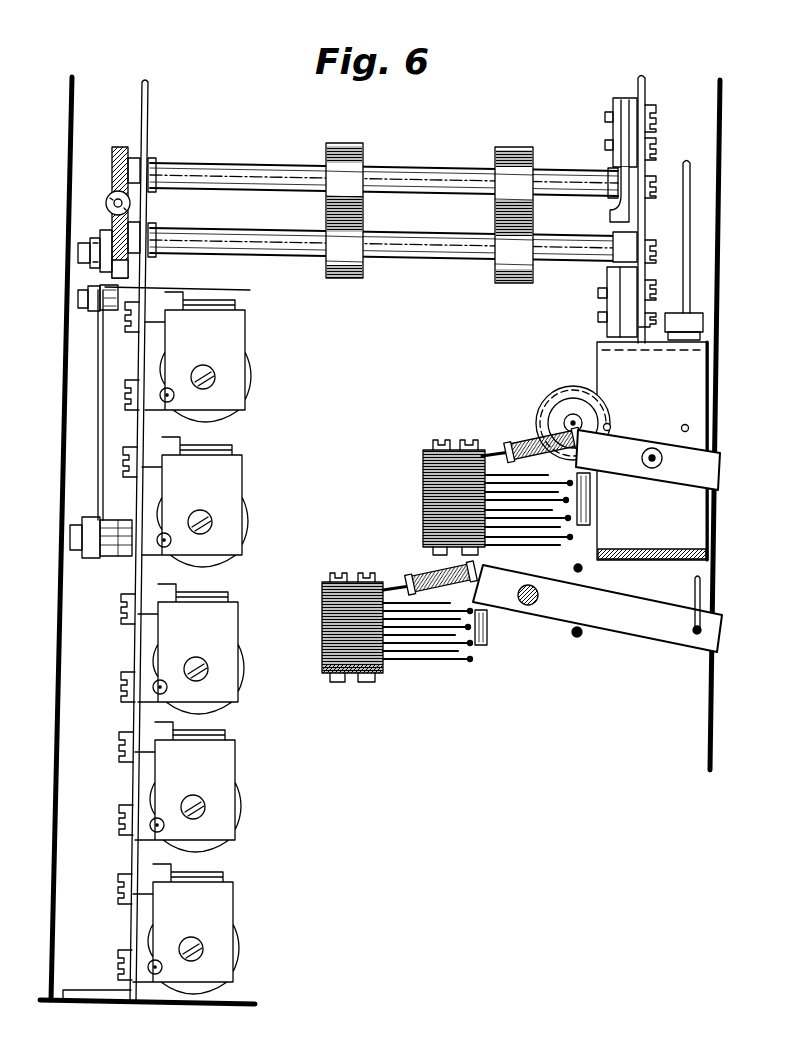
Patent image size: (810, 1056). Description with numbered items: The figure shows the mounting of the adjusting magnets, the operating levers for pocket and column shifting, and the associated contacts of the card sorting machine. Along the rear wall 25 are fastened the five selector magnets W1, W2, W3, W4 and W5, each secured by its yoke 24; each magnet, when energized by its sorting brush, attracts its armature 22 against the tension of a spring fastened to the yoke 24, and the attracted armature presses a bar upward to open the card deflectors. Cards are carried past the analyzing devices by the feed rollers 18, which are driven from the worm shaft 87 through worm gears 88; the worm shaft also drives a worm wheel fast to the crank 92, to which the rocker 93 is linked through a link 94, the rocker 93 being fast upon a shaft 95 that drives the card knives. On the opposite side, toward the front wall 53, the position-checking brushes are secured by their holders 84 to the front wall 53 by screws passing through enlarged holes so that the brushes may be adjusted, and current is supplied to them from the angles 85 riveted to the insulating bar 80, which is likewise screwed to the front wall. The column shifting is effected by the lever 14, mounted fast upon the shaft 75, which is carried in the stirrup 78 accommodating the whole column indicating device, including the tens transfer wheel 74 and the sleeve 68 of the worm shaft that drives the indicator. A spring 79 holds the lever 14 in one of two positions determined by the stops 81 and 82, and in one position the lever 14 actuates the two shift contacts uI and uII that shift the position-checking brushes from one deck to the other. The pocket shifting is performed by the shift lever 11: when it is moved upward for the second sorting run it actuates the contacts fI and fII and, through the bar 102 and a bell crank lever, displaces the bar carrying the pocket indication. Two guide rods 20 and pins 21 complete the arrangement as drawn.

The shift lever 11 is at (597, 630).
The lever 14 is at (648, 461).
The feed rollers 18 is at (515, 178).
The guide rods 20 is at (262, 243).
The pins 21 is at (582, 569).
The armature 22 is at (215, 733).
The yoke 24 is at (230, 340).
The rear wall 25 is at (133, 792).
The front wall 53 is at (645, 86).
The sleeve 68 is at (697, 313).
The tens transfer wheel 74 is at (552, 403).
The shaft 75 is at (652, 460).
The stirrup 78 is at (612, 367).
The spring 79 is at (533, 440).
The insulating bar 80 is at (591, 137).
The stop 81 is at (608, 424).
The stop 82 is at (685, 425).
The brush holders 84 is at (625, 278).
The angles 85 is at (622, 203).
The worm shaft 87 is at (112, 195).
The worm gears 88 is at (144, 159).
The crank 92 is at (102, 240).
The rocker 93 is at (100, 356).
The link 94 is at (194, 290).
The shaft 95 is at (75, 560).
The bar 102 is at (695, 588).
The selector magnet W1 is at (252, 380).
The selector magnet W2 is at (247, 520).
The selector magnet W3 is at (242, 665).
The selector magnet W4 is at (234, 580).
The selector magnet W5 is at (236, 945).
The shift contact uI is at (585, 488).
The shift contact uII is at (585, 538).
The contact fI is at (478, 628).
The contact fII is at (470, 655).